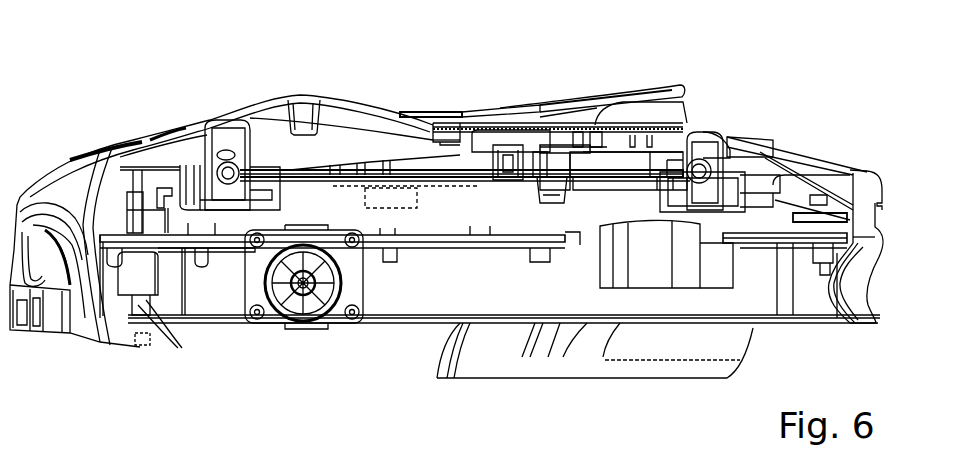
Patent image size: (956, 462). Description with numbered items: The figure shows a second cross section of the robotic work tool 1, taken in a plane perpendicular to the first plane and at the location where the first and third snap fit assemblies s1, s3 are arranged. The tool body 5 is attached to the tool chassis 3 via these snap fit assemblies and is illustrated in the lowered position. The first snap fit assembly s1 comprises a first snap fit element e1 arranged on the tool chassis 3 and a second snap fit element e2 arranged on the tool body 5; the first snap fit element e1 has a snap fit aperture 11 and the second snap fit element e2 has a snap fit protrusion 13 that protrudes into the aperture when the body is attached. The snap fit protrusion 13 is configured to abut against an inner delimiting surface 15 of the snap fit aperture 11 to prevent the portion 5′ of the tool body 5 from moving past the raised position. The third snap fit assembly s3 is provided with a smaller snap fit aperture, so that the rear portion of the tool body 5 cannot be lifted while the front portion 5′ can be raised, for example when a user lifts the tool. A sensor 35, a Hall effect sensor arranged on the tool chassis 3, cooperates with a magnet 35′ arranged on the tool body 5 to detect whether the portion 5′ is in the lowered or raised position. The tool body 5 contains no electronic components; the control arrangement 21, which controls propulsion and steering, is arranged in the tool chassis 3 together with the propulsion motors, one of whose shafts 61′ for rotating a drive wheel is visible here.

The robotic work tool 1 is at (798, 58).
The tool chassis 3 is at (397, 307).
The tool body 5 is at (68, 180).
The portion of the tool body 5′ is at (67, 108).
The snap fit aperture 11 is at (236, 156).
The snap fit protrusion 13 is at (230, 168).
The inner delimiting surface 15 is at (230, 173).
The control arrangement 21 is at (390, 195).
The sensor 35 is at (148, 304).
The magnet 35′ is at (143, 342).
The shaft 61′ is at (254, 316).
The first snap fit element e1 is at (225, 132).
The second snap fit element e2 is at (243, 173).
The first snap fit assembly s1 is at (240, 88).
The third snap fit assembly s3 is at (704, 112).